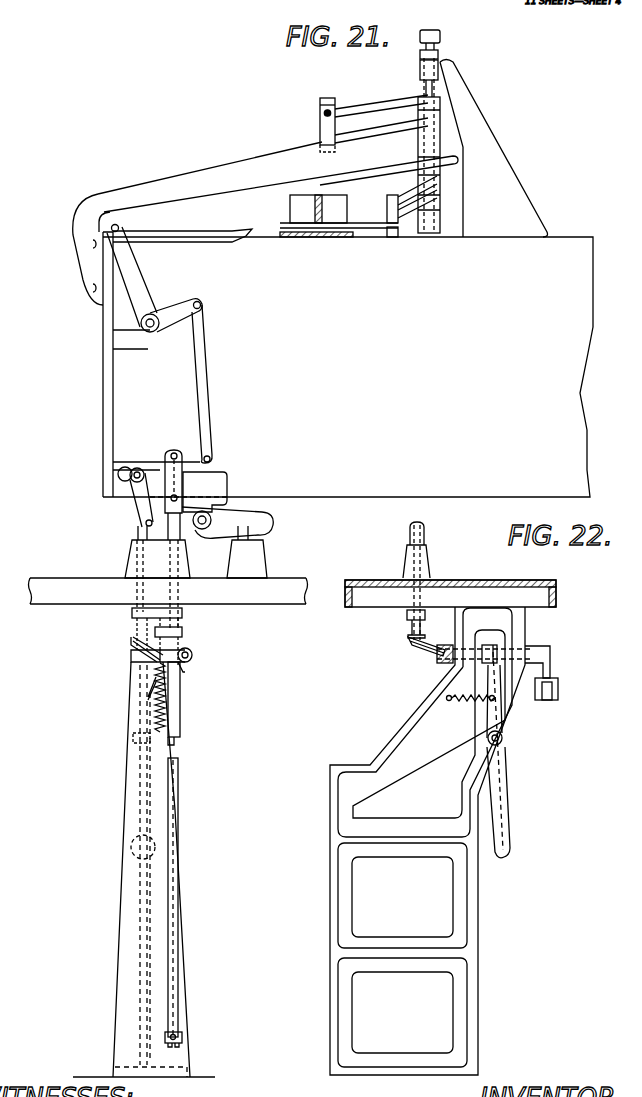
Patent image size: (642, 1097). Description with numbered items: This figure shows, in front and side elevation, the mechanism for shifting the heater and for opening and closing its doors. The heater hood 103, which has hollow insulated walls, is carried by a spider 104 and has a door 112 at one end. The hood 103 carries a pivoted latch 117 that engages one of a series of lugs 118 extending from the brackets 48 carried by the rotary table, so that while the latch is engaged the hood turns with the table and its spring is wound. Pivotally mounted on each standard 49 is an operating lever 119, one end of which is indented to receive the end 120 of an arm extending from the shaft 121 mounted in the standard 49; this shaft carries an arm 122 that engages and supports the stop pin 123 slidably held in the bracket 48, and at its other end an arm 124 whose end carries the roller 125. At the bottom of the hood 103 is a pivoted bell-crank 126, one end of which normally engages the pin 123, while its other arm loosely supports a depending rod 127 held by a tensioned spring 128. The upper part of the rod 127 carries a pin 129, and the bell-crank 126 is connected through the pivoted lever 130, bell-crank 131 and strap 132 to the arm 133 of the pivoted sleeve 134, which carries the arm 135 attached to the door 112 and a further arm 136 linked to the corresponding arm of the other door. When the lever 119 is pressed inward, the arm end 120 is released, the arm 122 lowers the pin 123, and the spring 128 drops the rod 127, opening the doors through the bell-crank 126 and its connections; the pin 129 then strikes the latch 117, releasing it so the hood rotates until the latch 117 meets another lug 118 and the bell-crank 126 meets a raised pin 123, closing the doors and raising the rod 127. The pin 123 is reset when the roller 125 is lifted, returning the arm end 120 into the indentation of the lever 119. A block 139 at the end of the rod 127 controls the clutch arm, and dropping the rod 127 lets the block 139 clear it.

In FIG. 21, the bracket 48 is at (281, 604).
In FIG. 22, the bracket 48 is at (557, 593).
In FIG. 21, the standard 49 is at (122, 897).
In FIG. 22, the standard 49 is at (479, 908).
In FIG. 21, the hood 103 is at (366, 497).
In FIG. 21, the spider 104 is at (290, 210).
In FIG. 21, the door 112 is at (100, 380).
In FIG. 21, the latch 117 is at (264, 512).
In FIG. 21, the lug 118 is at (250, 544).
In FIG. 22, the operating lever 119 is at (503, 782).
In FIG. 21, the arm end 120 is at (130, 654).
In FIG. 22, the arm end 120 is at (489, 646).
In FIG. 21, the shaft 121 is at (190, 650).
In FIG. 21, the arm 122 is at (134, 640).
In FIG. 22, the arm 122 is at (422, 646).
In FIG. 21, the stop pin 123 is at (138, 539).
In FIG. 22, the stop pin 123 is at (411, 629).
In FIG. 22, the arm 124 is at (551, 655).
In FIG. 22, the roller 125 is at (550, 700).
In FIG. 21, the bell-crank 126 is at (142, 516).
In FIG. 21, the depending rod 127 is at (181, 716).
In FIG. 21, the spring 128 is at (154, 710).
In FIG. 21, the pin 129 is at (180, 506).
In FIG. 21, the pivoted lever 130 is at (205, 385).
In FIG. 21, the bell-crank 131 is at (138, 288).
In FIG. 21, the strap 132 is at (242, 236).
In FIG. 21, the arm 133 is at (399, 196).
In FIG. 21, the pivoted sleeve 134 is at (428, 96).
In FIG. 21, the arm 135 is at (233, 174).
In FIG. 21, the arm 136 is at (320, 130).
In FIG. 21, the block 139 is at (183, 1038).